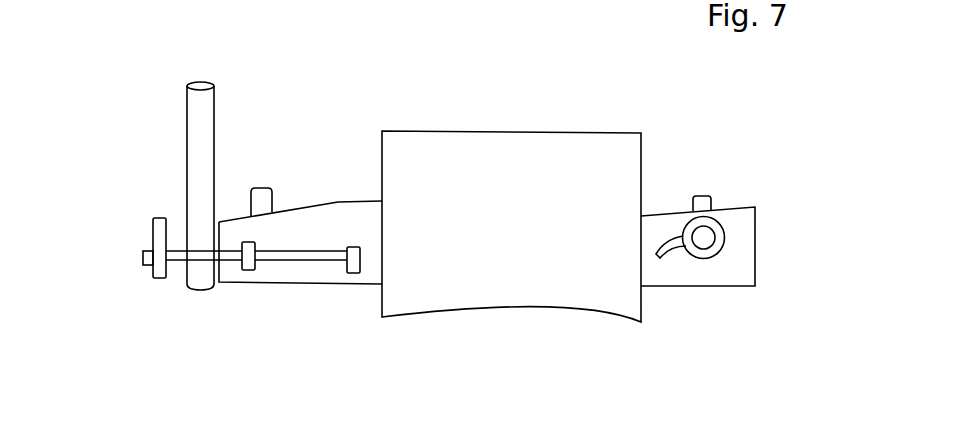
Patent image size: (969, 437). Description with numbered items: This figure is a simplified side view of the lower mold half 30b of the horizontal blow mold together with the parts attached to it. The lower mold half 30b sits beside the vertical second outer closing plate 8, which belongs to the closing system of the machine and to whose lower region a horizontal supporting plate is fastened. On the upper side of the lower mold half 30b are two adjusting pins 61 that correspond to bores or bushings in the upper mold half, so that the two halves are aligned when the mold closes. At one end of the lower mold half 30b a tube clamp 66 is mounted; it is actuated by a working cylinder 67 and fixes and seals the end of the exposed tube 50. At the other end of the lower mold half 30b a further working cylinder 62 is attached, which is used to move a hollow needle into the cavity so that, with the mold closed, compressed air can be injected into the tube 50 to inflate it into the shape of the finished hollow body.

The second outer closing plate 8 is at (459, 237).
The lower mold half 30b is at (730, 280).
The tube 50 is at (200, 130).
The adjusting pins 61 is at (264, 187).
The working cylinder 62 is at (710, 242).
The tube clamp 66 is at (158, 233).
The working cylinder 67 is at (292, 258).